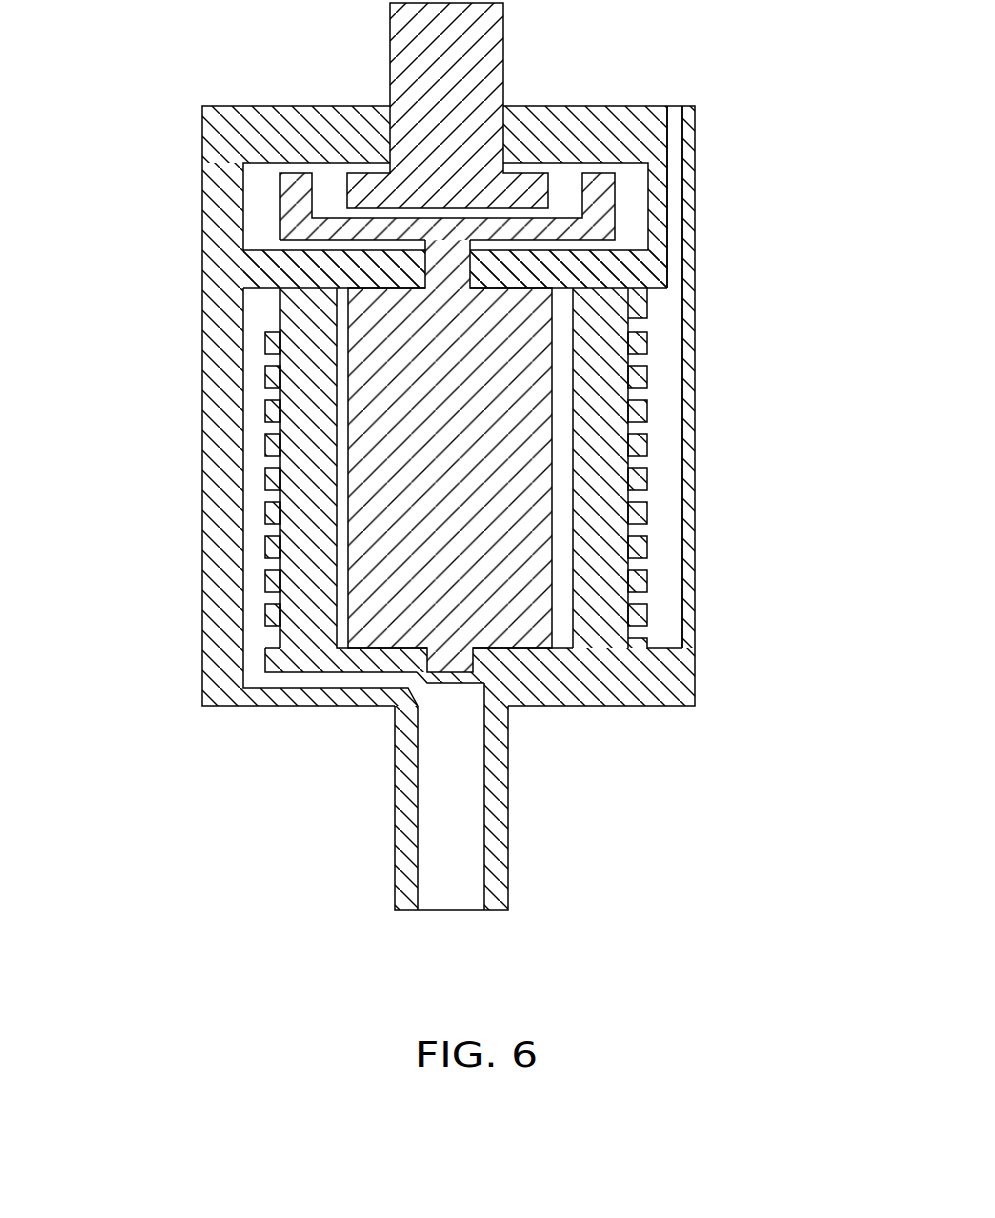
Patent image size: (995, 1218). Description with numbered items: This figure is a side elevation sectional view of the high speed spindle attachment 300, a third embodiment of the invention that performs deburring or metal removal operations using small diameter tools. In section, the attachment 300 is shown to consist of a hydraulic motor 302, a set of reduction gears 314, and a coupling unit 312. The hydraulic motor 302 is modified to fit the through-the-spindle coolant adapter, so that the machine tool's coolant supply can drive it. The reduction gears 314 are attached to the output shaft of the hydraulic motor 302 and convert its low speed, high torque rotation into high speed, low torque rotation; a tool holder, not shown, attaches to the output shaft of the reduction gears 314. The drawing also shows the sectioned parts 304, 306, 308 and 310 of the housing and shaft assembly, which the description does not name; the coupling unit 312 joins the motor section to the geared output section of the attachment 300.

The high speed spindle attachment 300 is at (455, 456).
The hydraulic motor 302 is at (202, 605).
The piston stem 304 is at (390, 22).
The tube 306 is at (395, 829).
The bellows inner wall 308 is at (273, 477).
The channel gap 310 is at (672, 148).
The coupling unit 312 is at (438, 267).
The reduction gears 314 is at (312, 208).